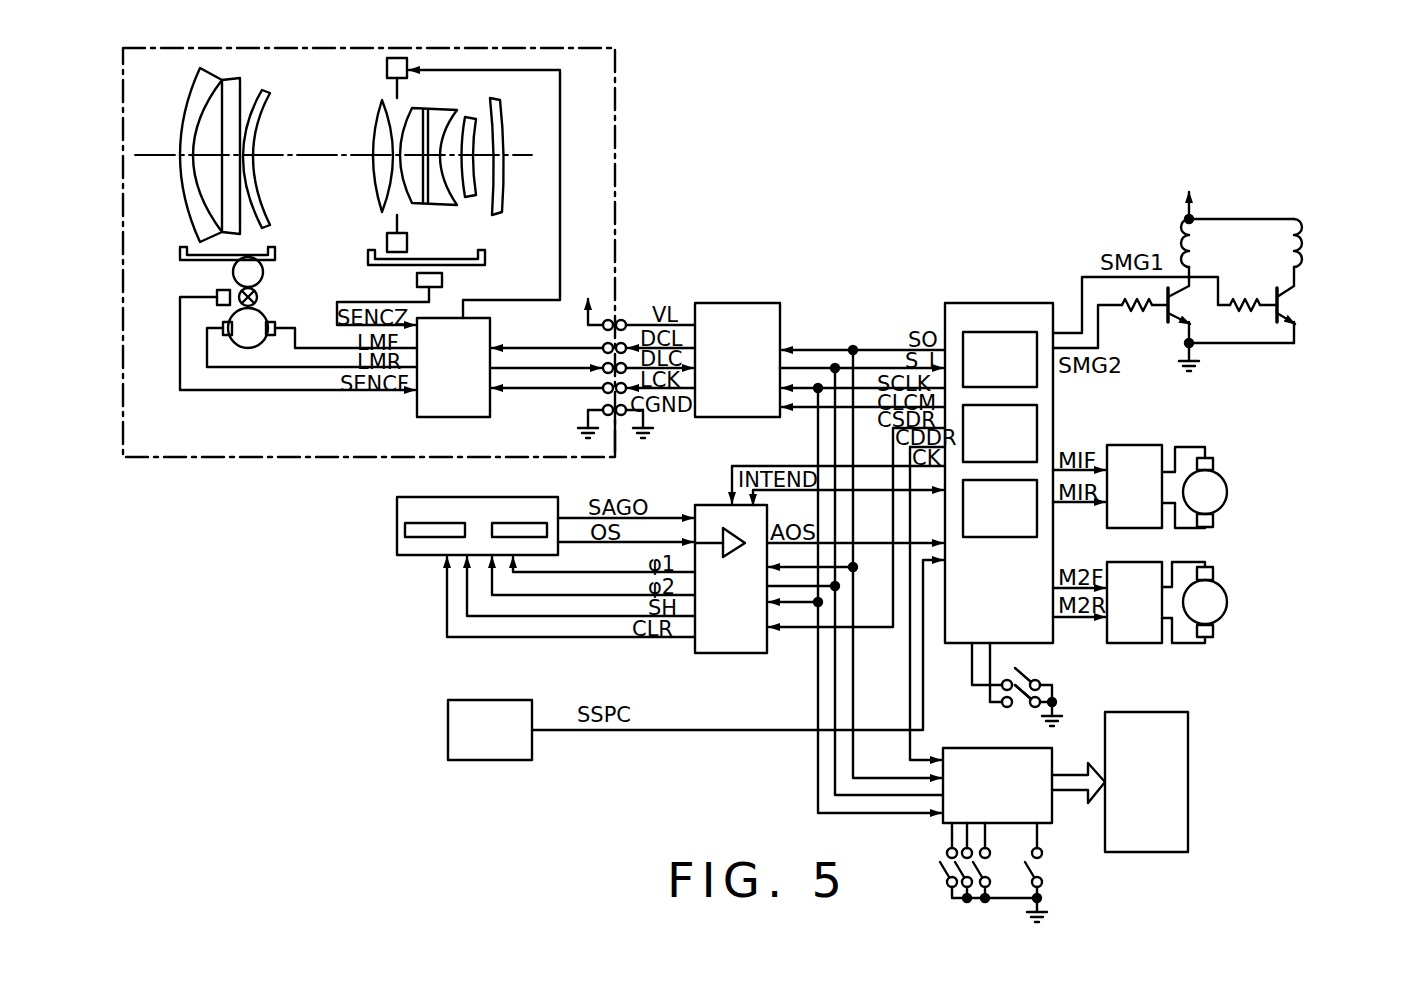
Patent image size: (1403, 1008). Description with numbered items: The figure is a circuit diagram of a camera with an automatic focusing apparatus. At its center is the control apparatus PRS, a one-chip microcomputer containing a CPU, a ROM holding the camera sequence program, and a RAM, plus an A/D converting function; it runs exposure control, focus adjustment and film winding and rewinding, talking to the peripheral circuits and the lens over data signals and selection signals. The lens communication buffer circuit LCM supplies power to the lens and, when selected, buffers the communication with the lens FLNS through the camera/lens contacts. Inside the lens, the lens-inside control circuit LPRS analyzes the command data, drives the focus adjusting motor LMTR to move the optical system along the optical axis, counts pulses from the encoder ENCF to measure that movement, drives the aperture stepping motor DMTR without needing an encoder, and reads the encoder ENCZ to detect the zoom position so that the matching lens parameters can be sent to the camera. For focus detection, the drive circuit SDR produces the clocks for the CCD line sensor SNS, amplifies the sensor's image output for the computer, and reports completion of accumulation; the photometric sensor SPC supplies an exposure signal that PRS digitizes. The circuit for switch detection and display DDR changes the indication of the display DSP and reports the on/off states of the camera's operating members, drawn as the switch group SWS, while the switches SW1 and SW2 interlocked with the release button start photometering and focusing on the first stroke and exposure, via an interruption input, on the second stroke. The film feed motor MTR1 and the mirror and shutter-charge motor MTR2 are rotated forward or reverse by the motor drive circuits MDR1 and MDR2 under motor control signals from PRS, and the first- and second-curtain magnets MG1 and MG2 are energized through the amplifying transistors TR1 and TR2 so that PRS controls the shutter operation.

The lens FLNS is at (617, 70).
The stepping motor DMTR is at (385, 68).
The encoder ENCF is at (218, 291).
The focus adjusting motor LMTR is at (262, 312).
The encoder ENCZ is at (443, 281).
The lens-inside control circuit LPRS is at (453, 367).
The lens communication buffer circuit LCM is at (737, 360).
The control apparatus PRS is at (999, 473).
The central processing unit CPU is at (1000, 359).
The element ROM is at (1000, 433).
The element RAM is at (1000, 508).
The line sensor SNS is at (477, 524).
The drive circuit SDR is at (731, 579).
The photometric sensor SPC is at (695, 660).
The circuit for switch detection and display DDR is at (997, 785).
The display DSP is at (1146, 782).
The switch SW1 is at (1020, 676).
The switch SW2 is at (1030, 706).
The switch group SWS is at (1045, 868).
The motor drive circuit MDR1 is at (1107, 486).
The motor drive circuit MDR2 is at (1107, 602).
The motor MTR1 is at (1226, 482).
The motor MTR2 is at (1226, 592).
The magnet MG1 is at (1300, 246).
The magnet MG2 is at (1196, 243).
The amplifying transistor TR1 is at (1296, 306).
The amplifying transistor TR2 is at (1192, 304).